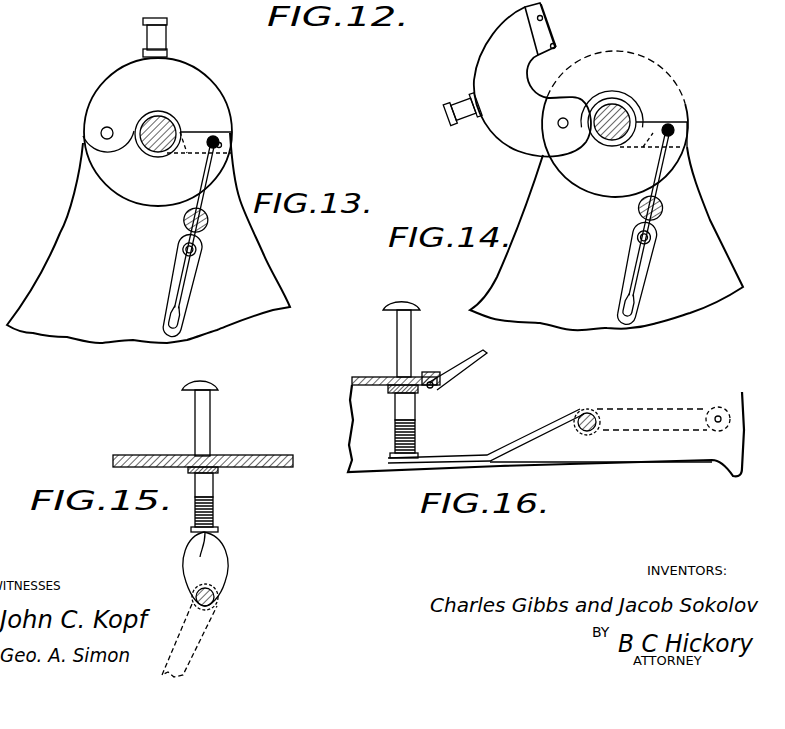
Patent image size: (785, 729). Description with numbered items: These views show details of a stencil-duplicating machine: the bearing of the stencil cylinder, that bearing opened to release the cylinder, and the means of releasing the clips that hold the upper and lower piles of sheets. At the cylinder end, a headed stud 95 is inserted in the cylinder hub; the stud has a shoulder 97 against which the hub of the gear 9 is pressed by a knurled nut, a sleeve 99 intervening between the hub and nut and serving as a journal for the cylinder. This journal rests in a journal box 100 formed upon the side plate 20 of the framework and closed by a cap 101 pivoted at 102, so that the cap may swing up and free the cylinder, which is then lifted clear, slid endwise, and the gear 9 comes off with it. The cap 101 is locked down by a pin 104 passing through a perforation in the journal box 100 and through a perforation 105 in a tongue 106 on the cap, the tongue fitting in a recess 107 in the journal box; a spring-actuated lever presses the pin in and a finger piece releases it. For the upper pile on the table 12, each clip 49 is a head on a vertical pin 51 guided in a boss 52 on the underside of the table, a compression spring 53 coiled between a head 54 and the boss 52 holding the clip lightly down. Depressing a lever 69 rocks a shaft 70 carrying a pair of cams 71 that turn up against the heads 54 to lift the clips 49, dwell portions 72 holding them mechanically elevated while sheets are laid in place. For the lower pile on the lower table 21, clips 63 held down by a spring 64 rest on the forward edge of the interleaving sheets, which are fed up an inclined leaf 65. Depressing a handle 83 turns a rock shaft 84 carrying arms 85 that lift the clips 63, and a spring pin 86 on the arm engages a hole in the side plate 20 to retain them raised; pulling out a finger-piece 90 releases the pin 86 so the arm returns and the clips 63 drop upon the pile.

In FIG. 14, the gear 9 is at (661, 68).
In FIG. 15, the table 12 is at (135, 455).
In FIG. 13, the side plate 20 is at (148, 238).
In FIG. 14, the side plate 20 is at (606, 238).
In FIG. 16, the side plate 20 is at (630, 462).
In FIG. 16, the lower table 21 is at (363, 377).
In FIG. 15, the clip 49 is at (205, 386).
In FIG. 15, the vertical pin 51 is at (206, 417).
In FIG. 15, the boss 52 is at (218, 476).
In FIG. 15, the compression spring 53 is at (216, 511).
In FIG. 15, the head 54 is at (218, 530).
In FIG. 16, the clip 63 is at (409, 305).
In FIG. 16, the spring 64 is at (396, 437).
In FIG. 16, the inclined leaf 65 is at (471, 363).
In FIG. 15, the lever 69 is at (182, 663).
In FIG. 15, the shaft 70 is at (215, 600).
In FIG. 15, the cam 71 is at (228, 562).
In FIG. 15, the dwell portion 72 is at (206, 552).
In FIG. 16, the lever 83 is at (641, 409).
In FIG. 16, the rock shaft 84 is at (580, 432).
In FIG. 16, the arm 85 is at (445, 458).
In FIG. 16, the spring pin 86 is at (717, 410).
In FIG. 16, the finger-piece 90 is at (719, 430).
In FIG. 13, the headed stud 95 is at (160, 116).
In FIG. 14, the headed stud 95 is at (630, 116).
In FIG. 14, the shoulder 97 is at (614, 98).
In FIG. 13, the sleeve 99 is at (141, 122).
In FIG. 14, the sleeve 99 is at (634, 100).
In FIG. 14, the journal box 100 is at (615, 147).
In FIG. 13, the cap 101 is at (206, 118).
In FIG. 14, the cap 101 is at (517, 82).
In FIG. 13, the pivot 102 is at (101, 133).
In FIG. 14, the pivot 102 is at (558, 123).
In FIG. 13, the pin 104 is at (219, 140).
In FIG. 14, the pin 104 is at (738, 128).
In FIG. 14, the perforation 105 is at (543, 18).
In FIG. 13, the tongue 106 is at (221, 146).
In FIG. 14, the tongue 106 is at (554, 44).
In FIG. 13, the recess 107 is at (183, 157).
In FIG. 14, the recess 107 is at (642, 148).